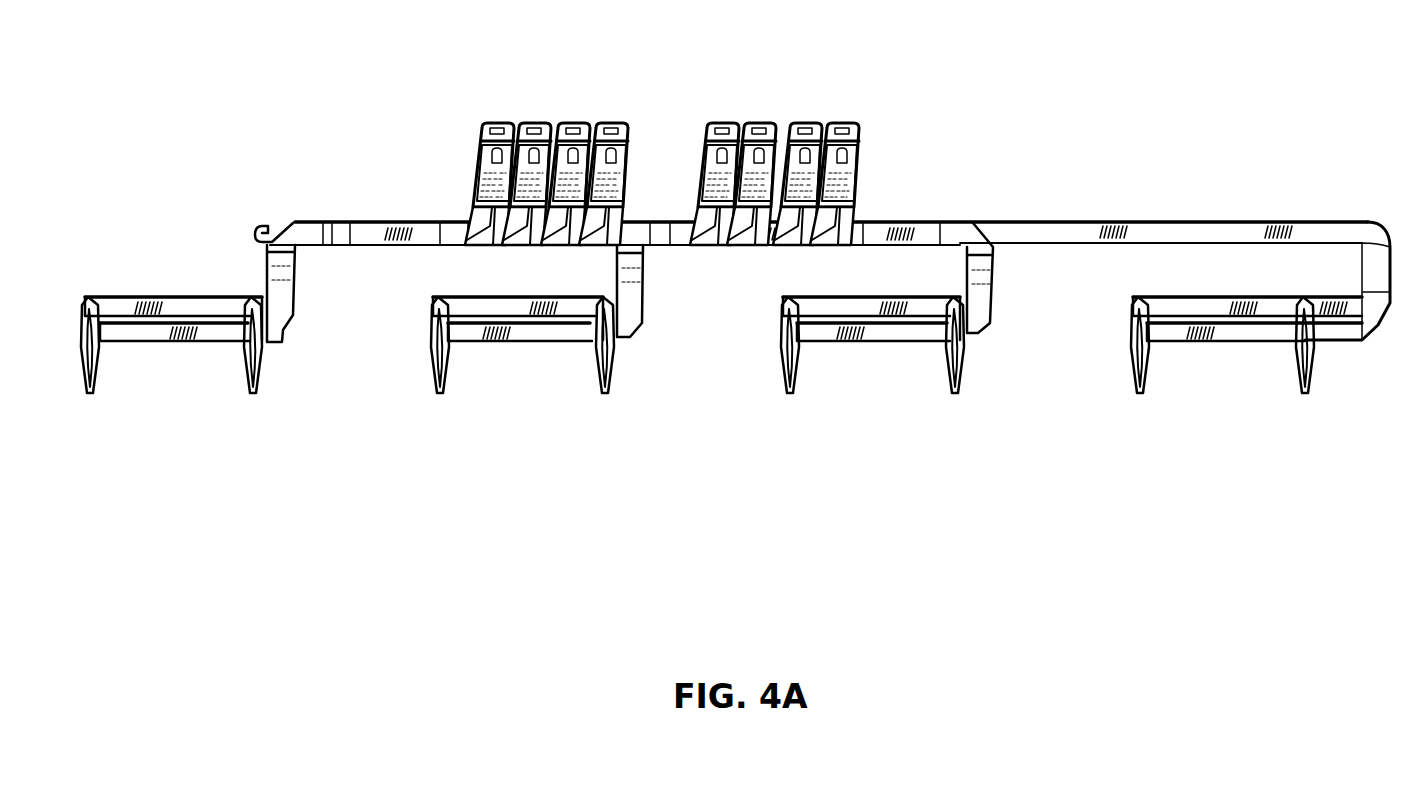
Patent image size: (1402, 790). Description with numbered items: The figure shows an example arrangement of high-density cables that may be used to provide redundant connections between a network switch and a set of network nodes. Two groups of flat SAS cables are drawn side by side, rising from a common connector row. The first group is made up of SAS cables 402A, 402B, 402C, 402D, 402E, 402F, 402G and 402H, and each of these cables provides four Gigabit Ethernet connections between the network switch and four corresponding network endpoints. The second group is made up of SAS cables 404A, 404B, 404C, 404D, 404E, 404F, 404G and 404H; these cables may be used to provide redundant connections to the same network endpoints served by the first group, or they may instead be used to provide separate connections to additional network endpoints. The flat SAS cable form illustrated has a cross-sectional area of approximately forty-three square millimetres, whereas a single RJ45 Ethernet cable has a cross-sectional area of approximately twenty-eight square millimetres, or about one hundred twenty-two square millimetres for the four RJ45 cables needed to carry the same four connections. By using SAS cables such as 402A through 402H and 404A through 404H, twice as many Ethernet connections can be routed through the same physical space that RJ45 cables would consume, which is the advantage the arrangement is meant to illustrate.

The SAS cable 402A is at (500, 131).
The SAS cable 402B is at (483, 149).
The SAS cable 402C is at (553, 139).
The SAS cable 402D is at (548, 132).
The SAS cable 402E is at (580, 131).
The SAS cable 402F is at (637, 165).
The SAS cable 402G is at (637, 184).
The SAS cable 402H is at (633, 112).
The SAS cable 404A is at (712, 131).
The SAS cable 404B is at (723, 149).
The SAS cable 404C is at (781, 139).
The SAS cable 404D is at (778, 132).
The SAS cable 404E is at (810, 131).
The SAS cable 404F is at (880, 156).
The SAS cable 404G is at (868, 184).
The SAS cable 404H is at (864, 184).